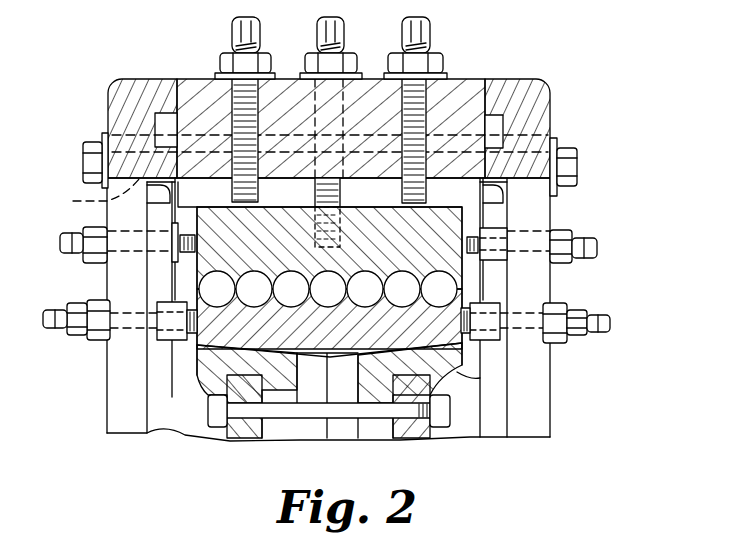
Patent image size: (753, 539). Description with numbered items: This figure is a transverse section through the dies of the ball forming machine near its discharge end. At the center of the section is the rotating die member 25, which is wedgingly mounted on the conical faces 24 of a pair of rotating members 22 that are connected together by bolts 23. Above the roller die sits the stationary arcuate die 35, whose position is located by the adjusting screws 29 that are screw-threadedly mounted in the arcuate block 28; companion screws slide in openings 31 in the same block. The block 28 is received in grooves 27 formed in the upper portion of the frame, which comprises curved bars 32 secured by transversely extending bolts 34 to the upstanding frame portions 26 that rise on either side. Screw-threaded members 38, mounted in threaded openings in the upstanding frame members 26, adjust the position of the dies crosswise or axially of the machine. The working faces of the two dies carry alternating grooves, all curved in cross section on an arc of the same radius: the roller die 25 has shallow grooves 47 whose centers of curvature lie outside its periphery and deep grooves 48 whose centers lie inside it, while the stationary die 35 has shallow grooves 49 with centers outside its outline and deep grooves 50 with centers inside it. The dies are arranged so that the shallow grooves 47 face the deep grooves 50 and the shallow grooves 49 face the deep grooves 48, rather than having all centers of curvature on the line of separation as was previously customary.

The rotating members 22 is at (243, 437).
The bolts 23 is at (310, 405).
The conical faces 24 is at (243, 355).
The die member 25 is at (328, 310).
The upstanding frame portions 26 is at (113, 412).
The grooves 27 is at (150, 120).
The arcuate block 28 is at (450, 100).
The adjusting screws 29 is at (233, 100).
The openings 31 is at (308, 128).
The curved bars 32 is at (120, 127).
The transversely extending bolts 34 is at (92, 196).
The stationary arcuate die 35 is at (213, 213).
The screw-threaded members 38 is at (72, 252).
The shallow grooves 47 is at (220, 303).
The deep grooves 48 is at (405, 302).
The shallow grooves 49 is at (248, 268).
The deep grooves 50 is at (217, 270).